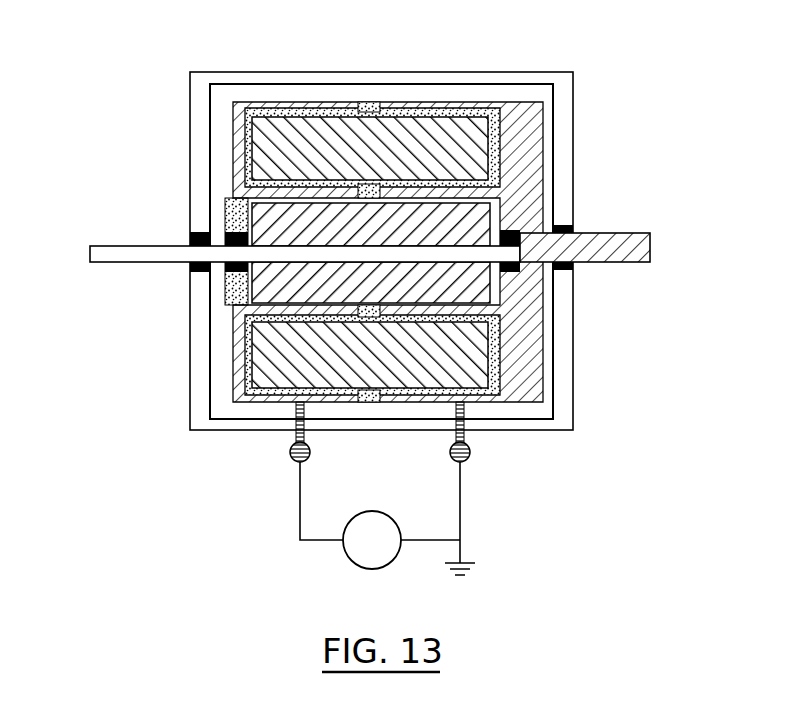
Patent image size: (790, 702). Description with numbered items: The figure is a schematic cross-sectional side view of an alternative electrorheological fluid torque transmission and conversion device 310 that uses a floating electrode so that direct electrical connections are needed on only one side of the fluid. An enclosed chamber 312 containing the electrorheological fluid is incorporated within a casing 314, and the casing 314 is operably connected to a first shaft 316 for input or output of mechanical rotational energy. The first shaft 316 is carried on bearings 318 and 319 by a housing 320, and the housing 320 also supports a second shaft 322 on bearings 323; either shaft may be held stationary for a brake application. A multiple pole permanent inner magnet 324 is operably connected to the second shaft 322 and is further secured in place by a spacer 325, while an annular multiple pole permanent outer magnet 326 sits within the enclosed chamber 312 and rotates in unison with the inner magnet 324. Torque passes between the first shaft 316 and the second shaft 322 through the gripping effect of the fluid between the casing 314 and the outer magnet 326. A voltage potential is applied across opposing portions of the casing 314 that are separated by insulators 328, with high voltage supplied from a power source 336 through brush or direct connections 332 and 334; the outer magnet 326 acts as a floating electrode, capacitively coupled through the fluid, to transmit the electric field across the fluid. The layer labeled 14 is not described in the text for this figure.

The torque transmission and conversion device 310 is at (100, 110).
The enclosed chamber 312 is at (232, 106).
The casing 314 is at (292, 105).
The first shaft 316 is at (95, 249).
The bearing 318 is at (222, 240).
The bearing 319 is at (225, 232).
The housing 320 is at (510, 74).
The second shaft 322 is at (650, 262).
The bearings 323 is at (566, 240).
The inner magnet 324 is at (490, 216).
The spacer 325 is at (230, 290).
The outer magnet 326 is at (483, 162).
The insulators 328 is at (380, 173).
The brush or direct connection 332 is at (299, 453).
The brush or direct connection 334 is at (467, 453).
The power source 336 is at (352, 551).
The dielectric layer 14 is at (245, 355).